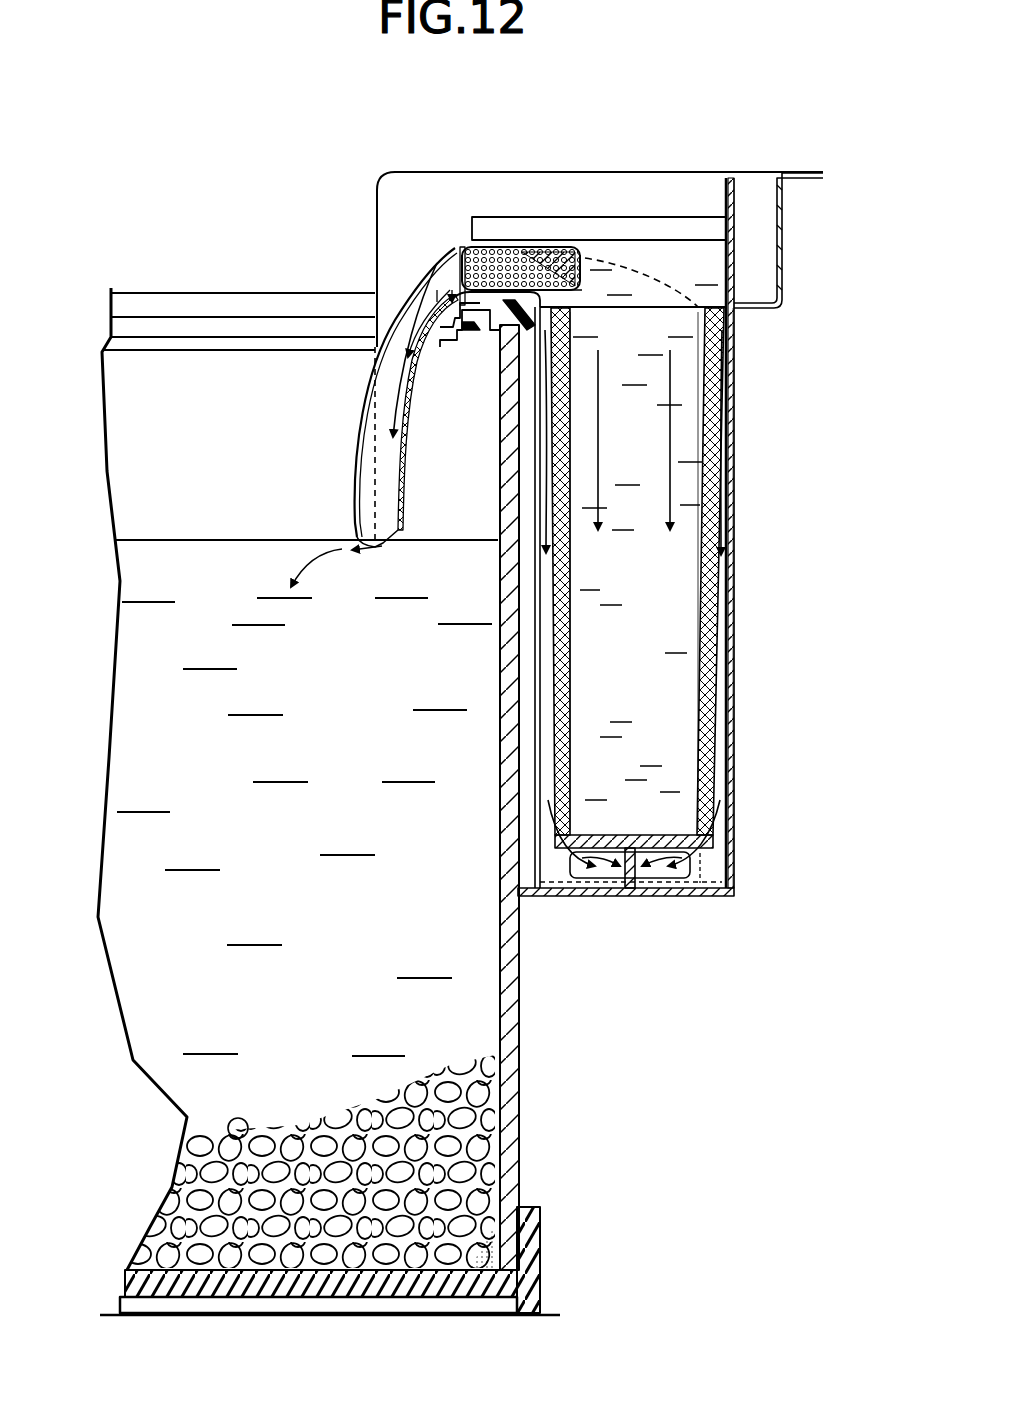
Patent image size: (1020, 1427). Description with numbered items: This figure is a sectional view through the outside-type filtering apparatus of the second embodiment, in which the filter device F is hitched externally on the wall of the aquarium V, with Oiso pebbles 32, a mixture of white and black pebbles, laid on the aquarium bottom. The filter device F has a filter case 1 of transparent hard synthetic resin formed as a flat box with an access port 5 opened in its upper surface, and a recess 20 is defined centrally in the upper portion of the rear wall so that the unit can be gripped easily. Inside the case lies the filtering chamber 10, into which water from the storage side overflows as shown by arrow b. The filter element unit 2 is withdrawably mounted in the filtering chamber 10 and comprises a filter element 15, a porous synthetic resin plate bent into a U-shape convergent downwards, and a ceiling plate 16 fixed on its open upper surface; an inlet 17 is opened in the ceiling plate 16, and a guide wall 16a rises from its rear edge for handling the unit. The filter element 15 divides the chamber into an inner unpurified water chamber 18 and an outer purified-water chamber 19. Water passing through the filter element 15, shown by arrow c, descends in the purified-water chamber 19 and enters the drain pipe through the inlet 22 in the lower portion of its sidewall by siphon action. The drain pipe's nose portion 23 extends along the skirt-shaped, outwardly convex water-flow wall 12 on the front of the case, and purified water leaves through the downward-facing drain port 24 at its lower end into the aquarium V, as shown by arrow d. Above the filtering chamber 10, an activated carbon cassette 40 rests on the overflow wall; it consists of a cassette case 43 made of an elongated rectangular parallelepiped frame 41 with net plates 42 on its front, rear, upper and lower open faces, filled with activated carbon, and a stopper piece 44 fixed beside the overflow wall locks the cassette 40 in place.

The filter case 1 is at (728, 800).
The filter element unit 2 is at (722, 610).
The access port 5 is at (703, 305).
The filtering chamber 10 is at (678, 463).
The water-flow wall 12 is at (359, 387).
The filter element 15 is at (713, 688).
The ceiling plate 16 is at (577, 262).
The guide wall 16a is at (728, 197).
The inlet 17 is at (668, 307).
The unpurified water chamber 18 is at (646, 684).
The purified-water chamber 19 is at (720, 740).
The recess 20 is at (782, 204).
The inlet 22 is at (615, 877).
The nose portion 23 is at (357, 392).
The drain port 24 is at (375, 548).
The Oiso pebbles 32 is at (240, 1127).
The activated carbon cassette 40 is at (455, 252).
The frame 41 is at (460, 243).
The net plates 42 is at (522, 258).
The cassette case 43 is at (481, 175).
The stopper piece 44 is at (455, 250).
The aquarium V is at (524, 1018).
The arrow b is at (640, 250).
The arrow c is at (685, 415).
The arrow d is at (387, 523).
The filter device F is at (738, 628).